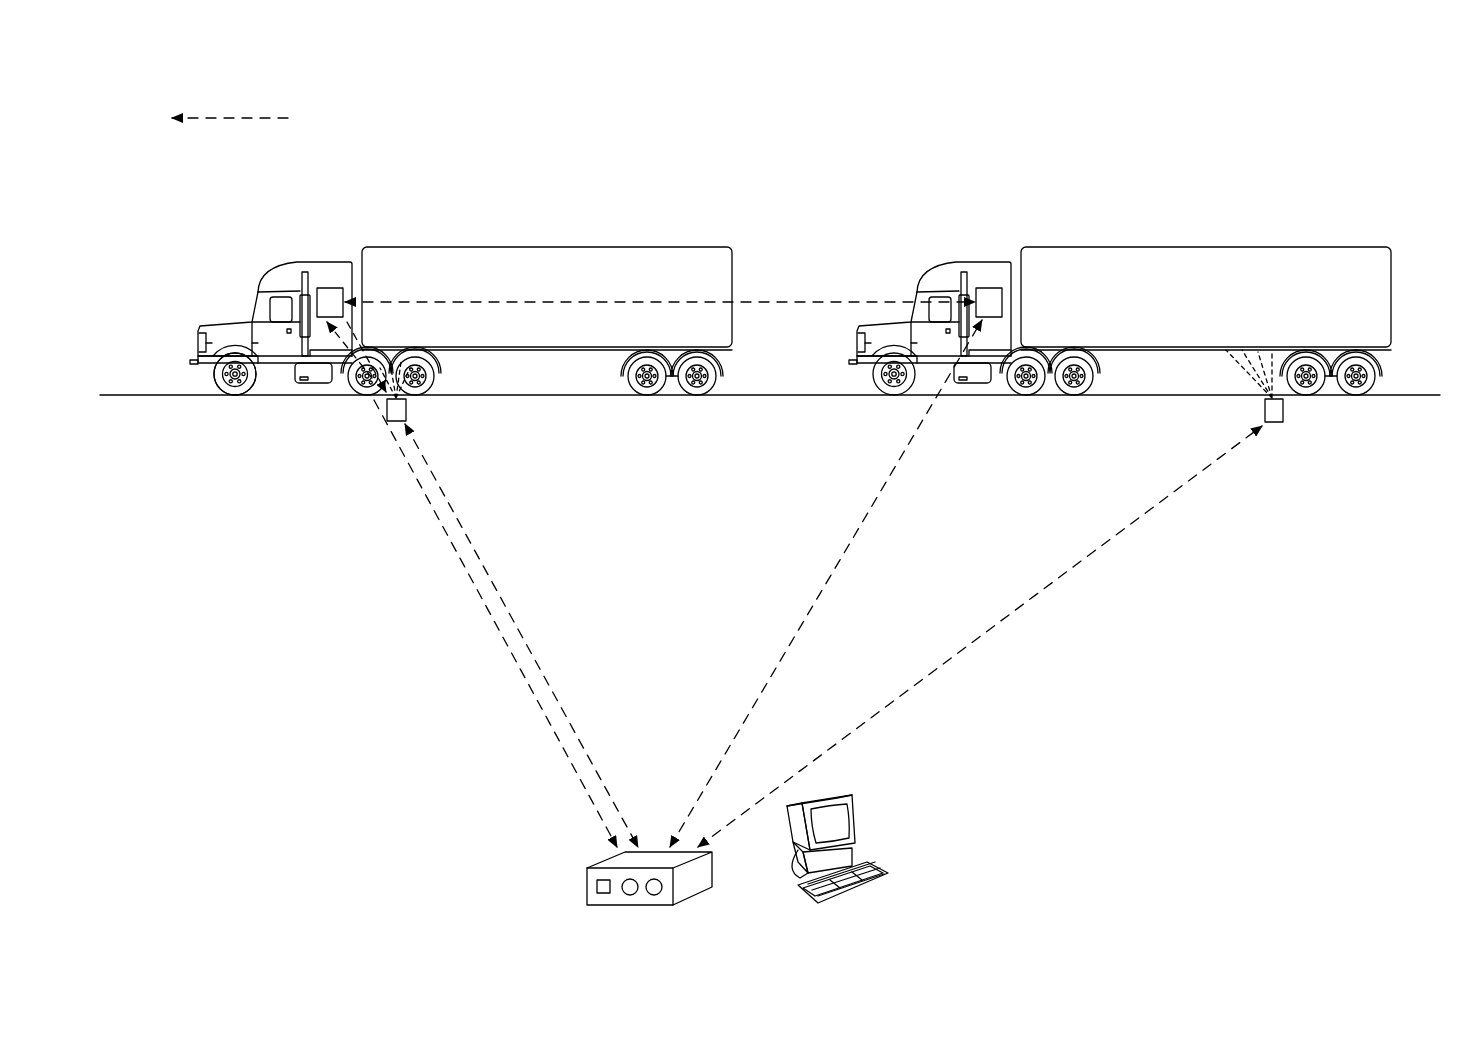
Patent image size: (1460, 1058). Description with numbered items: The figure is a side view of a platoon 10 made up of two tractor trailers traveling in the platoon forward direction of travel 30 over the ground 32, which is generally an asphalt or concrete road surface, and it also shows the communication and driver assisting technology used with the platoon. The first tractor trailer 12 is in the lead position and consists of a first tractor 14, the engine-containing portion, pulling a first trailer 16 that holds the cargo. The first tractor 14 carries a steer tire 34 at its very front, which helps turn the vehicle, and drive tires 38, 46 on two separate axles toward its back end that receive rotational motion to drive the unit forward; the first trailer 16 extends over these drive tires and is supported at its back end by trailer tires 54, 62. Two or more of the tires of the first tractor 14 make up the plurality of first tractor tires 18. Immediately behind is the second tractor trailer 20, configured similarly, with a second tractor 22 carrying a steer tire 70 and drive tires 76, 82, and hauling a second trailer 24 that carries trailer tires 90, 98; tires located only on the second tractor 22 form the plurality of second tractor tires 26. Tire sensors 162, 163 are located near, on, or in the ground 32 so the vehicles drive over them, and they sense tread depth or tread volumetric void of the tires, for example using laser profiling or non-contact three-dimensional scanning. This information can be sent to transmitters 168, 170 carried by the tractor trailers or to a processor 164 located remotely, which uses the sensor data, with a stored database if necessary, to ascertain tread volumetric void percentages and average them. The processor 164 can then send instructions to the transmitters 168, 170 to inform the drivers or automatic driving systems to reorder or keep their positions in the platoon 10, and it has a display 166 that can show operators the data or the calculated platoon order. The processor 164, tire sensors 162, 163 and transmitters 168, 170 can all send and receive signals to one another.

The platoon 10 is at (1360, 82).
The first tractor trailer 12 is at (529, 222).
The first tractor 14 is at (284, 273).
The first trailer 16 is at (627, 251).
The plurality of first tractor tires 18 is at (222, 395).
The second tractor trailer 20 is at (1198, 197).
The second tractor 22 is at (940, 273).
The second trailer 24 is at (1325, 251).
The plurality of second tractor tires 26 is at (859, 393).
The platoon forward direction of travel 30 is at (262, 116).
The ground 32 is at (150, 393).
The steer tire 34 is at (240, 395).
The drive tire 38 is at (358, 395).
The drive tire 46 is at (430, 395).
The trailer tire 54 is at (641, 395).
The trailer tire 62 is at (703, 395).
The steer tire 70 is at (888, 395).
The drive tire 76 is at (1012, 395).
The drive tire 82 is at (1088, 395).
The trailer tire 90 is at (1312, 395).
The trailer tire 98 is at (1363, 395).
The tire sensor 162 is at (388, 421).
The tire sensor 163 is at (1266, 412).
The processor 164 is at (592, 885).
The display 166 is at (838, 830).
The transmitter 168 is at (333, 290).
The transmitter 170 is at (990, 290).